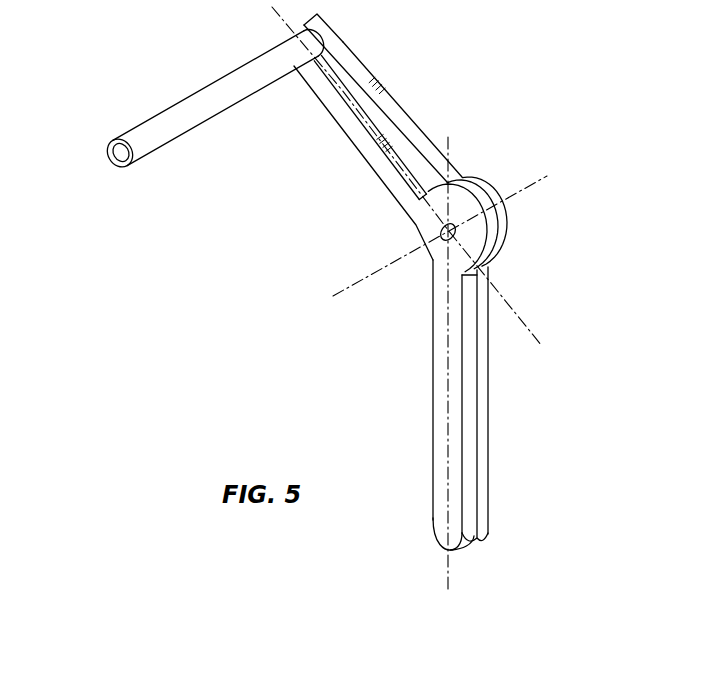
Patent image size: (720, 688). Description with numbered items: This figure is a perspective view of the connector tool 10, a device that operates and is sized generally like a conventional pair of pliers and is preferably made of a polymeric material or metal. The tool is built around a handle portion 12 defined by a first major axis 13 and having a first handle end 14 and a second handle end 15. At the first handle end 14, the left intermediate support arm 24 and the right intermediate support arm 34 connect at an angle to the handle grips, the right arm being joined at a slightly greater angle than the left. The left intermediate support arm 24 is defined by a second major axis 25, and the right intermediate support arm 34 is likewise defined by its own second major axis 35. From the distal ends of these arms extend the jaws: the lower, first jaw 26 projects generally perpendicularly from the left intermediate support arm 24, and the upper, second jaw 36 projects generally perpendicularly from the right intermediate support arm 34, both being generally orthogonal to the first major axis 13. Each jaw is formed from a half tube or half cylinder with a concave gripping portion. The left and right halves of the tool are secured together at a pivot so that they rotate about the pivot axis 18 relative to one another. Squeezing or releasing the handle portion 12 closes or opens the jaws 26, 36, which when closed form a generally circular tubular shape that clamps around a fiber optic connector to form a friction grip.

The connector tool 10 is at (411, 63).
The handle portion 12 is at (493, 401).
The first major axis 13 is at (450, 578).
The first handle end 14 is at (482, 250).
The second handle end 15 is at (480, 535).
The pivot axis 18 is at (522, 192).
The left intermediate support arm 24 is at (368, 148).
The second major axis 25 is at (522, 307).
The first jaw 26 is at (113, 155).
The right intermediate support arm 34 is at (413, 125).
The second major axis 35 is at (465, 183).
The upper, second jaw 36 is at (177, 112).